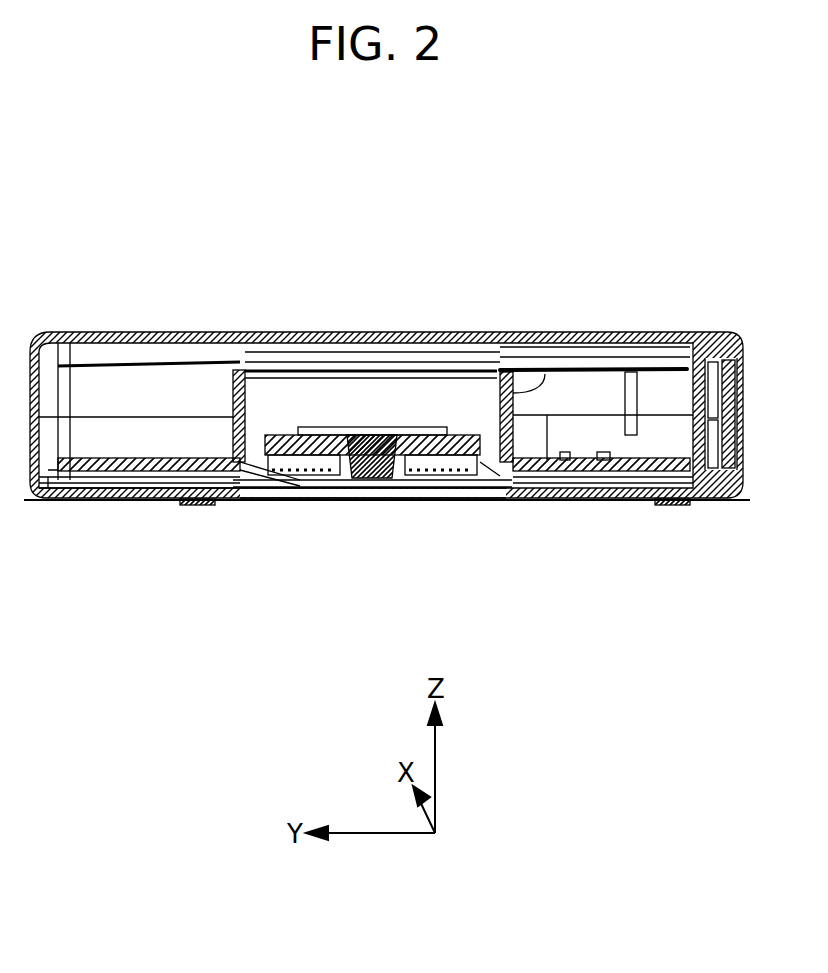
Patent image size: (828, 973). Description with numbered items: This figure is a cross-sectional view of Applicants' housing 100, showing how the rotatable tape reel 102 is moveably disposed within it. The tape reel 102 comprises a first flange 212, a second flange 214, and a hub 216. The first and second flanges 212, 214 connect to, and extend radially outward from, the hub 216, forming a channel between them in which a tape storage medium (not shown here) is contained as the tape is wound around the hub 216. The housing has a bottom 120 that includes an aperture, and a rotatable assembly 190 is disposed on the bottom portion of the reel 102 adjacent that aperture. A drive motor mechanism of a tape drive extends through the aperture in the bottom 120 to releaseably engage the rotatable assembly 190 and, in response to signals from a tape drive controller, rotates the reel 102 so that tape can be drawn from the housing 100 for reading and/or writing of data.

The housing 100 is at (58, 330).
The rotatable reel 102 is at (443, 338).
The bottom 120 is at (92, 502).
The assembly 190 is at (362, 502).
The first flange 212 is at (165, 332).
The second flange 214 is at (185, 506).
The hub 216 is at (544, 340).